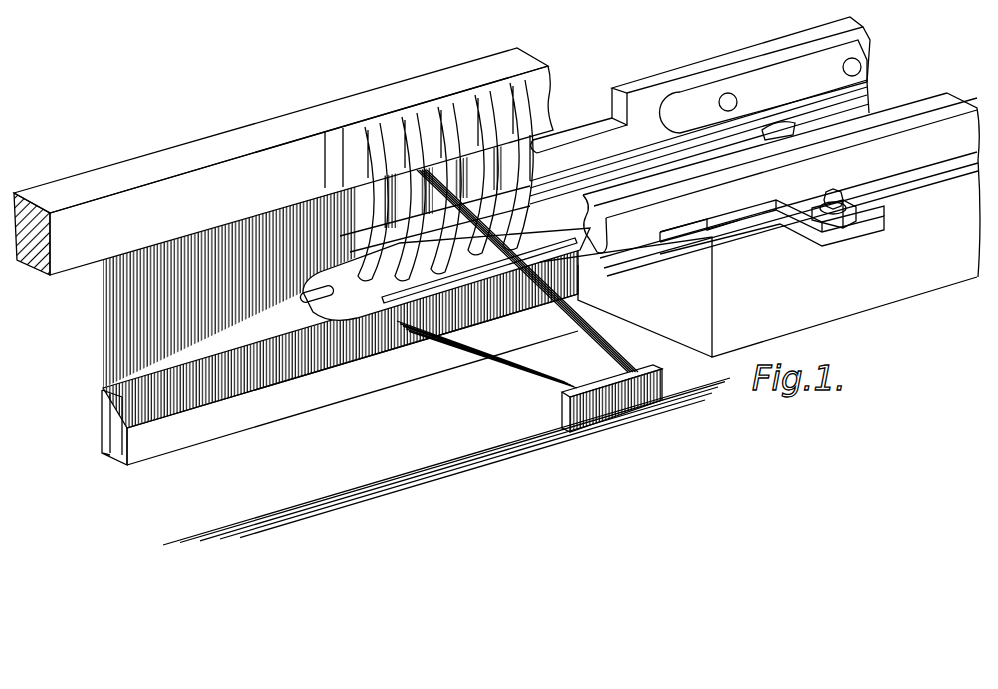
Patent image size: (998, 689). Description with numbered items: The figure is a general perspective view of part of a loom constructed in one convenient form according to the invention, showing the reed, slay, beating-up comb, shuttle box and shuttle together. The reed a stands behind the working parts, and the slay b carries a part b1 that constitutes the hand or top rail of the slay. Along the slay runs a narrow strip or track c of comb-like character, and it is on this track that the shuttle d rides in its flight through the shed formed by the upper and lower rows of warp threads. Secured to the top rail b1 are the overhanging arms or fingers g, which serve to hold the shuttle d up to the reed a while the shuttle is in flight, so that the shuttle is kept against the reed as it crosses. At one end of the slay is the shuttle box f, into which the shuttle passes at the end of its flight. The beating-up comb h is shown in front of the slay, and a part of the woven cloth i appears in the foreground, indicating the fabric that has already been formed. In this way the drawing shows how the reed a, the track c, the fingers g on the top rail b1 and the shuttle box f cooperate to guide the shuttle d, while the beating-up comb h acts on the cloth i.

The reed a is at (109, 313).
The slay b is at (182, 443).
The hand or top rail b1 is at (283, 161).
The comb-like strip or track c is at (110, 405).
The shuttle d is at (357, 312).
The shuttle box f is at (909, 152).
The overhanging arms or fingers g is at (426, 108).
The beating-up comb h is at (563, 410).
The woven cloth i is at (308, 501).